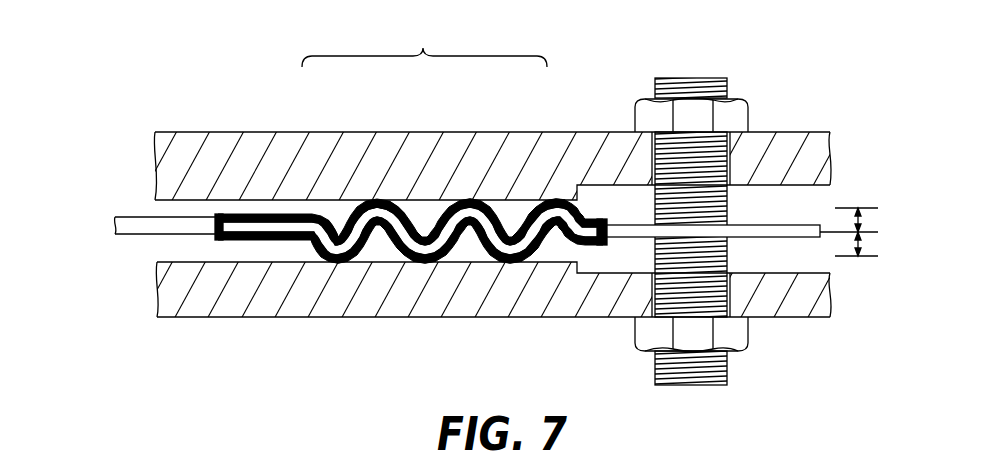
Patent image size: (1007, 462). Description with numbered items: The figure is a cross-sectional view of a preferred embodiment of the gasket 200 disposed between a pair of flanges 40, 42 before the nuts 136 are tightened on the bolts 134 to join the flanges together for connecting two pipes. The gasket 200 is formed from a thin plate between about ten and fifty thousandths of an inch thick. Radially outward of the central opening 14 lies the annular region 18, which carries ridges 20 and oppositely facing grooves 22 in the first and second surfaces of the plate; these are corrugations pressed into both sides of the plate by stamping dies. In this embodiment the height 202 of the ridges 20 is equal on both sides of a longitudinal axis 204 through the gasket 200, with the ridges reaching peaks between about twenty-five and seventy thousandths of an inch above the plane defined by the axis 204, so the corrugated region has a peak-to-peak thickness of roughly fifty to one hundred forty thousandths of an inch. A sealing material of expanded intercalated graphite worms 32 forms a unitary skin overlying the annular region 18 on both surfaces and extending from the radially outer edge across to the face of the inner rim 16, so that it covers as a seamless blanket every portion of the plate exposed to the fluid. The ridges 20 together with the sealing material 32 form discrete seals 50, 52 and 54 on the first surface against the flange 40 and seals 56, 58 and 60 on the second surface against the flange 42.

The central opening 14 is at (132, 235).
The inner rim 16 is at (218, 238).
The annular region 18 is at (410, 137).
The ridges 20 is at (372, 213).
The grooves 22 is at (341, 228).
The sealing material of expanded intercalated graphite worms 32 is at (258, 240).
The flange 40 is at (828, 143).
The flange 42 is at (828, 303).
The seal 50 is at (400, 200).
The seal 52 is at (470, 200).
The seal 54 is at (553, 200).
The seal 56 is at (340, 263).
The seal 58 is at (425, 263).
The seal 60 is at (508, 263).
The bolts 134 is at (712, 200).
The nuts 136 is at (735, 117).
The gasket 200 is at (620, 240).
The height of the ridges 202 is at (863, 218).
The longitudinal axis 204 is at (867, 232).